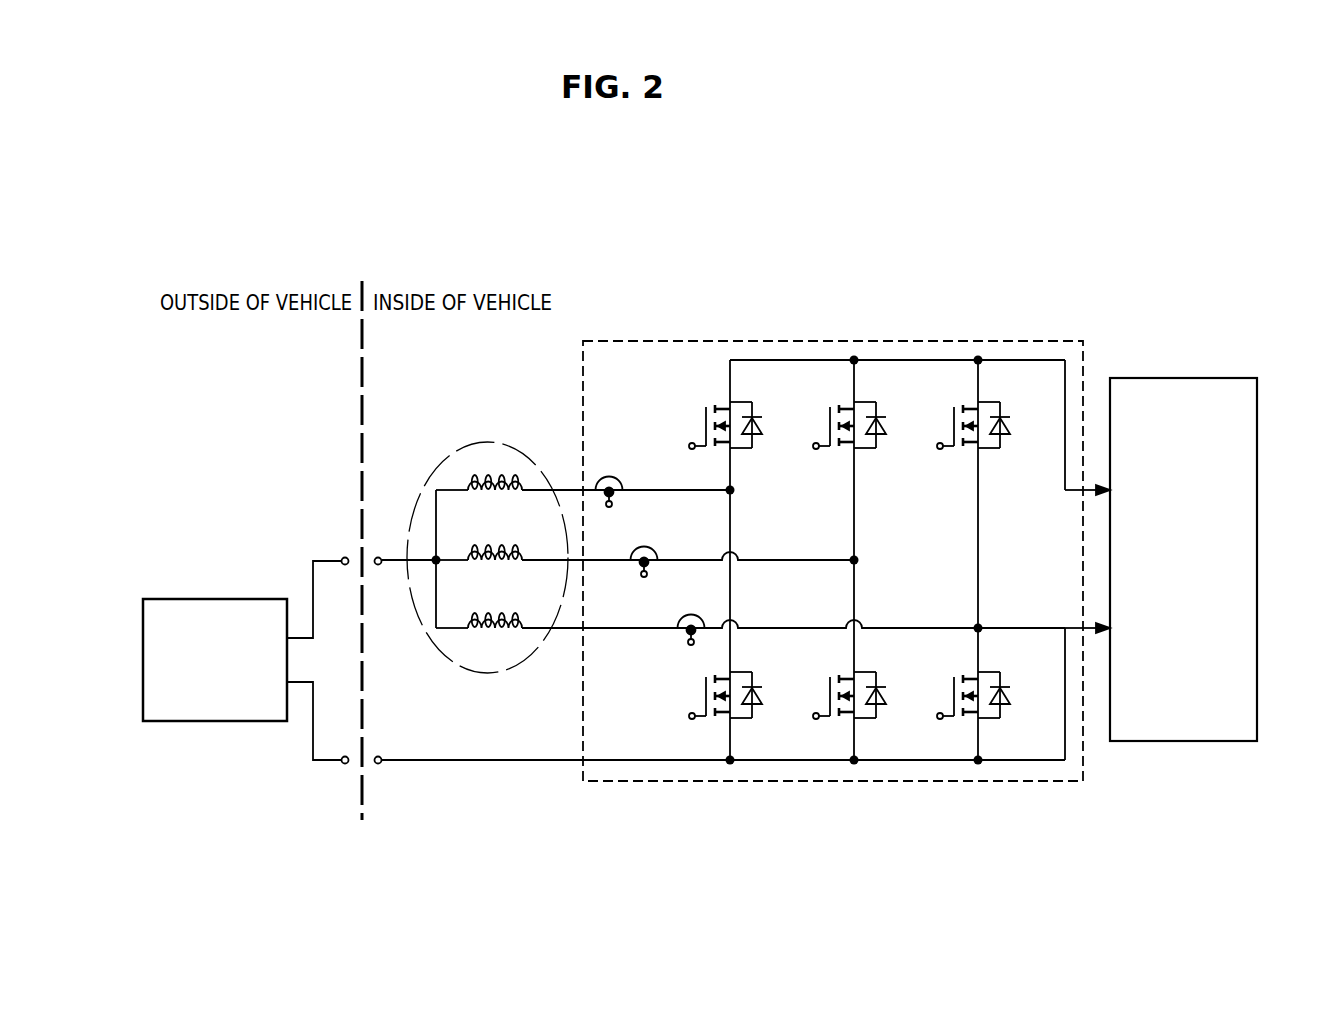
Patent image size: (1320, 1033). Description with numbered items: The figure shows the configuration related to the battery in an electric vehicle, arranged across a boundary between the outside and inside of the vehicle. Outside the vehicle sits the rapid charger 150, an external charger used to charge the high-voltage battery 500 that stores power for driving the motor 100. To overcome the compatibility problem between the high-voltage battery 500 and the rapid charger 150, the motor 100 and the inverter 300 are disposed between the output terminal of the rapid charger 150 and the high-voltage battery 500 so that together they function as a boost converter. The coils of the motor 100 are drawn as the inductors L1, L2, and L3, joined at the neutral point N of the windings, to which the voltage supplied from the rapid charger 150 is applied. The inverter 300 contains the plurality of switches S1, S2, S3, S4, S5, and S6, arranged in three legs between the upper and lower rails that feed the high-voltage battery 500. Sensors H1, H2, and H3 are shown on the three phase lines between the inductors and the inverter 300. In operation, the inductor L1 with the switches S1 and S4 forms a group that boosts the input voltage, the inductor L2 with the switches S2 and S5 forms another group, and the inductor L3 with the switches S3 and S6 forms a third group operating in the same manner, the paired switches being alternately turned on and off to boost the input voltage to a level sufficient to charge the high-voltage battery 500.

The motor 100 is at (475, 533).
The rapid charger 150 is at (180, 599).
The inverter 300 is at (846, 533).
The high-voltage battery 500 is at (1222, 378).
The neutral point N is at (436, 560).
The inductor L1 is at (495, 471).
The inductor L2 is at (495, 541).
The inductor L3 is at (495, 609).
The first current sensor H1 is at (609, 478).
The second current sensor H2 is at (644, 548).
The third current sensor H3 is at (691, 616).
The switch S1 is at (741, 695).
The switch S2 is at (865, 695).
The switch S3 is at (989, 695).
The switch S4 is at (741, 425).
The switch S5 is at (865, 425).
The switch S6 is at (989, 425).